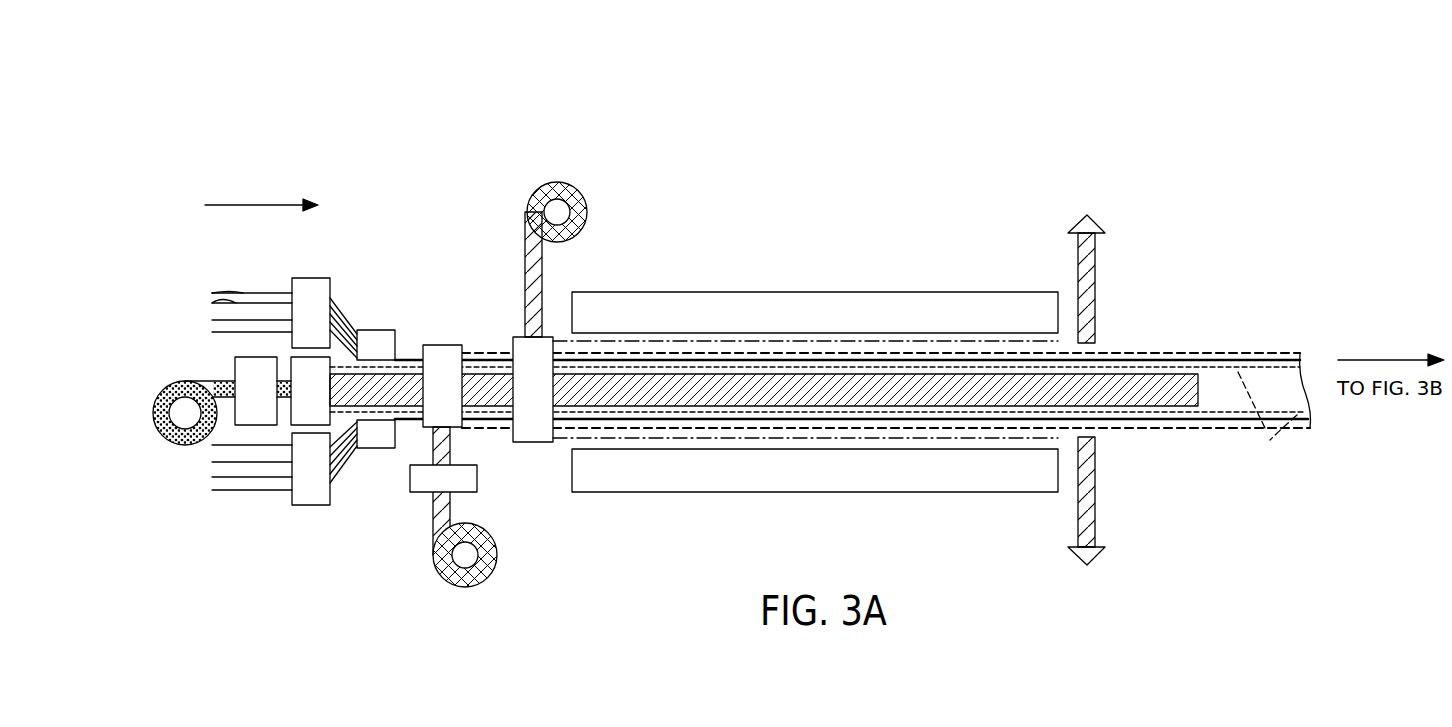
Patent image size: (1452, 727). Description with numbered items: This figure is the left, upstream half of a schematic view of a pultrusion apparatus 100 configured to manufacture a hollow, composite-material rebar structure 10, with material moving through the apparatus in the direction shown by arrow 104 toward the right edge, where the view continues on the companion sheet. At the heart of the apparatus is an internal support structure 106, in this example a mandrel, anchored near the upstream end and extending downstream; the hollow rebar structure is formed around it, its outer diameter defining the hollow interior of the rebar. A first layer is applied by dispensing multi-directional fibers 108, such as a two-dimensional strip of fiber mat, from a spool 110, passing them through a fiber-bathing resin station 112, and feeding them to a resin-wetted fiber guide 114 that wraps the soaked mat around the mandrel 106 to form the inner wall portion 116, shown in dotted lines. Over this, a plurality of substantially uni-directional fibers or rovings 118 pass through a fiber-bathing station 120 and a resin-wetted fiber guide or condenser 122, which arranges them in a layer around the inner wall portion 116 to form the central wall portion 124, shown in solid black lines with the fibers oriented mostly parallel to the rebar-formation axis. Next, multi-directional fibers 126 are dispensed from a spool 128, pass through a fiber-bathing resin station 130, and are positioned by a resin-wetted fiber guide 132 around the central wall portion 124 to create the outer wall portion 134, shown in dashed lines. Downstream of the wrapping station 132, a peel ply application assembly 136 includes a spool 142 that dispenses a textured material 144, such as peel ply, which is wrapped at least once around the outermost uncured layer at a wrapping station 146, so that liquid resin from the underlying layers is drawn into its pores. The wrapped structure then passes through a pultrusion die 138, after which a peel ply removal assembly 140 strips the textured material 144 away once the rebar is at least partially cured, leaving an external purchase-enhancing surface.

The rebar structure 10 is at (1300, 315).
The pultrusion apparatus 100 is at (746, 96).
The arrow 104 is at (255, 200).
The internal support structure 106 is at (1198, 405).
The multi-directional fibers 108 is at (222, 387).
The spool 110 is at (172, 413).
The fiber-bathing resin station 112 is at (247, 363).
The resin-wetted fiber guide 114 is at (322, 398).
The inner wall portion 116 is at (1265, 428).
The uni-directional fibers 118 is at (212, 303).
The fiber-bathing station 120 is at (310, 278).
The resin-wetted fiber guide or condenser 122 is at (377, 330).
The central wall portion 124 is at (400, 357).
The multi-directional fibers 126 is at (445, 510).
The spool 128 is at (465, 575).
The fiber-bathing resin station 130 is at (470, 492).
The resin-wetted fiber guide 132 is at (445, 345).
The outer wall portion 134 is at (480, 353).
The peel ply application assembly 136 is at (500, 232).
The pultrusion die 138 is at (760, 292).
The peel ply removal assembly 140 is at (1180, 238).
The spool 142 is at (558, 200).
The textured material 144 is at (537, 280).
The wrapping station 146 is at (530, 442).